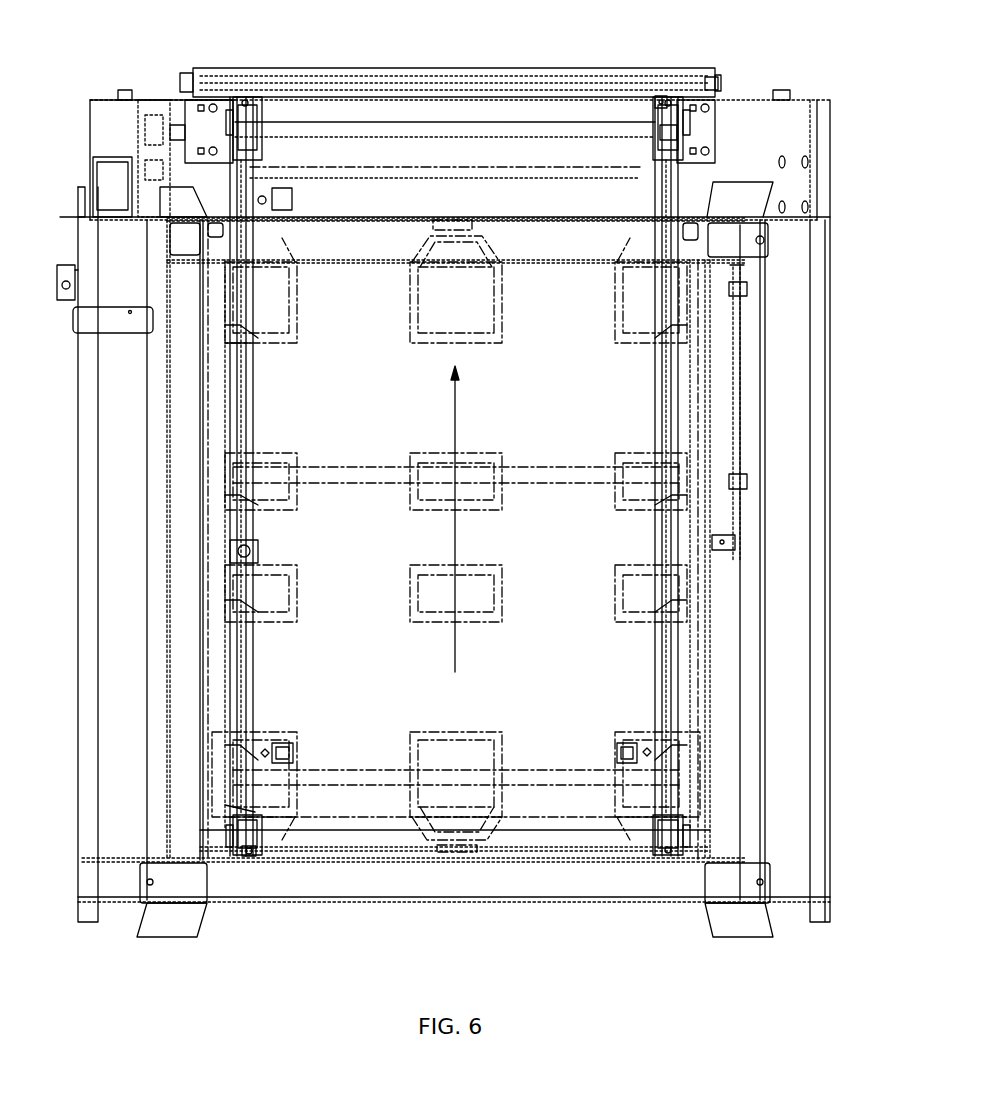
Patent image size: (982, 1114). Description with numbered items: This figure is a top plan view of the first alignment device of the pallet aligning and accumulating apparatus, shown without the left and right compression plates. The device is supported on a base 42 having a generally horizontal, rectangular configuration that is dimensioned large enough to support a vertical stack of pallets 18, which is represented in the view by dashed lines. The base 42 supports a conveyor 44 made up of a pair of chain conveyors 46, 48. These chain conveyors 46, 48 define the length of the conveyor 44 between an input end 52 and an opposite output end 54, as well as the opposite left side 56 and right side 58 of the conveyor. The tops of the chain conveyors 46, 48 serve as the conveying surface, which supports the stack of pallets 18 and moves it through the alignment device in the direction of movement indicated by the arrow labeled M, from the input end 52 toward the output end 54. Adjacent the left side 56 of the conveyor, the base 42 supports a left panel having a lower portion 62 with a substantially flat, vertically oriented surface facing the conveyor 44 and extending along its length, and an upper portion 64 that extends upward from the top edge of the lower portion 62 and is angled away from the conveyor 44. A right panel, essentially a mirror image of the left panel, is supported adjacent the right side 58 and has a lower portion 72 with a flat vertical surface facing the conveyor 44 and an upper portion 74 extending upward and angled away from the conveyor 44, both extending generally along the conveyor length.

The stack of pallets 18 is at (345, 296).
The base 42 is at (743, 798).
The conveyor 44 is at (666, 100).
The chain conveyor 46 is at (253, 857).
The chain conveyor 48 is at (660, 100).
The input end 52 is at (665, 859).
The output end 54 is at (241, 99).
The left side 56 is at (241, 419).
The right side 58 is at (661, 406).
The left panel lower portion 62 is at (207, 700).
The left panel upper portion 64 is at (188, 645).
The right panel lower portion 72 is at (688, 703).
The right panel upper portion 74 is at (727, 633).